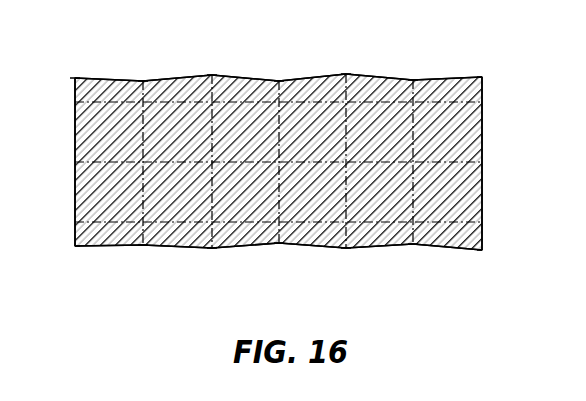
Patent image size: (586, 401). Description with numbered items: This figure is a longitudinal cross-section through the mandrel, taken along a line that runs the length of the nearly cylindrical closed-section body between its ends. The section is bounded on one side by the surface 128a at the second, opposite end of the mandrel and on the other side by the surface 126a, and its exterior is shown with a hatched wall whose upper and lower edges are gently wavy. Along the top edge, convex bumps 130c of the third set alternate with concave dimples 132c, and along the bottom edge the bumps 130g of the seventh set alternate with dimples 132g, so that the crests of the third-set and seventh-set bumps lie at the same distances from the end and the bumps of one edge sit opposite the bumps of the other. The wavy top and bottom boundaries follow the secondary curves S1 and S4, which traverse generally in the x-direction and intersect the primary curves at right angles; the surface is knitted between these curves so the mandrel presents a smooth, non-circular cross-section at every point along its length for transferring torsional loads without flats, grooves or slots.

The second side surface 126a is at (483, 188).
The second end 128a is at (75, 148).
The bumps of the third set 130c is at (75, 78).
The dimples of the third set 132c is at (143, 81).
The bumps of the seventh set 130g is at (75, 247).
The dimples of the seventh set 132g is at (143, 246).
The secondary curve S1 is at (304, 70).
The secondary curve S4 is at (312, 257).